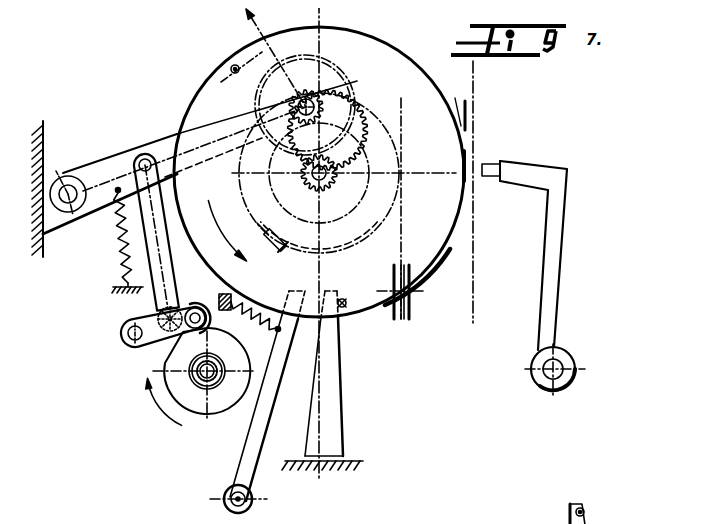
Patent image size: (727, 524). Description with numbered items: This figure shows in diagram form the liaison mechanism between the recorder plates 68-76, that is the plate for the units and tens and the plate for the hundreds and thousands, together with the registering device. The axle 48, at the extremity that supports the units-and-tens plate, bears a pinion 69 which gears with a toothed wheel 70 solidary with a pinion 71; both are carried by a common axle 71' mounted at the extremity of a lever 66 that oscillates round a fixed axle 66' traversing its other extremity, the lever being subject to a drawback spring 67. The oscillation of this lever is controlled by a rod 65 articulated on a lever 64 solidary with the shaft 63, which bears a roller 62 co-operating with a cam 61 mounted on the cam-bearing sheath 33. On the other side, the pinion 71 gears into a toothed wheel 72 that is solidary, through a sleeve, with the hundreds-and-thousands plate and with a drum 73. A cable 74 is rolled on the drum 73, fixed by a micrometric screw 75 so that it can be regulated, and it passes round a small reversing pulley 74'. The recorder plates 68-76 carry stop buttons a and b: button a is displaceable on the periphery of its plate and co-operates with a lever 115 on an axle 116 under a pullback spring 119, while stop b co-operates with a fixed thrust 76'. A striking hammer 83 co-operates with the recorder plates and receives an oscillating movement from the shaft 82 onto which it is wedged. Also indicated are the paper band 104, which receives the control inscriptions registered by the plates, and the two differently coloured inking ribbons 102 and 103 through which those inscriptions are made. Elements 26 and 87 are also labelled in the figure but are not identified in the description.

The recorder plates 68-76 is at (430, 98).
The toothed wheel 70 is at (330, 63).
The pinion 71 is at (332, 117).
The common axle 71' is at (306, 93).
The toothed wheel 72 is at (368, 164).
The drum 73 is at (342, 240).
The cable 74 is at (415, 208).
The reversing pulley 74' is at (411, 292).
The micrometric screw 75 is at (278, 250).
The axle 48 is at (308, 188).
The pinion 69 is at (325, 183).
The paper band 104 is at (470, 114).
The inking ribbon 103 is at (463, 128).
The inking ribbon 102 is at (462, 180).
The striking hammer 83 is at (529, 163).
The shaft 82 is at (543, 366).
The catch 87 is at (586, 509).
The lever 66 is at (210, 136).
The fixed axle 66' is at (104, 189).
The drawback spring 67 is at (117, 242).
The rod 65 is at (156, 232).
The roller 62 is at (195, 307).
The lever 64 is at (156, 313).
The shaft 63 is at (133, 343).
The bearing 26 is at (195, 371).
The cam-bearing sheath 33 is at (196, 385).
The cam 61 is at (201, 413).
The pullback spring 119 is at (250, 319).
The lever 115 is at (240, 455).
The axle 116 is at (229, 506).
The fixed thrust 76' is at (326, 380).
The stop button a is at (231, 66).
The stop b is at (344, 300).